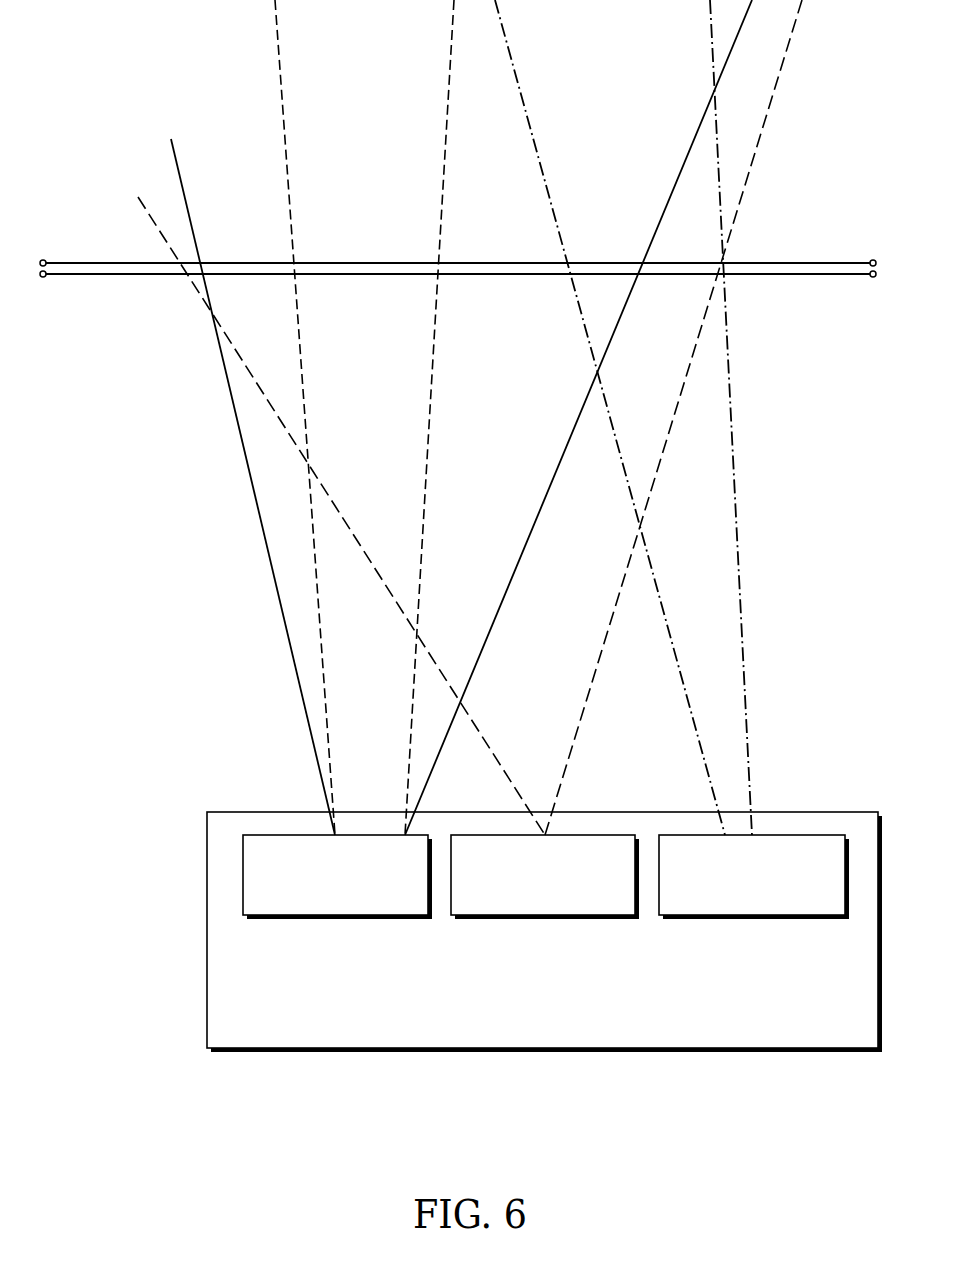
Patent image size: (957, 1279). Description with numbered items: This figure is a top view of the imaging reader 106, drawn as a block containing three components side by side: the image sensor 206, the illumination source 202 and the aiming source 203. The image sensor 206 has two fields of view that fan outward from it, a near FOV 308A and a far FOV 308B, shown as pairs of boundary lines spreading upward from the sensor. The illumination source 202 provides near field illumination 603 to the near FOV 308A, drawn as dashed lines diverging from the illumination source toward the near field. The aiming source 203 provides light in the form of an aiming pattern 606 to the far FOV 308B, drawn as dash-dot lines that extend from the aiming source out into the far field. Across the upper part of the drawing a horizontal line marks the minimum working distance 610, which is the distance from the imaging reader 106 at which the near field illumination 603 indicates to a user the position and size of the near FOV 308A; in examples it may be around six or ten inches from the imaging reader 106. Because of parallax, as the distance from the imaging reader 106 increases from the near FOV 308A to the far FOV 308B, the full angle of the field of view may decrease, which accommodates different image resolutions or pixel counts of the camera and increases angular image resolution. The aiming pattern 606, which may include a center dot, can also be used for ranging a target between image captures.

The imaging reader 106 is at (207, 930).
The image sensor 206 is at (338, 916).
The illumination source 202 is at (545, 916).
The aiming source 203 is at (755, 916).
The near FOV 308A is at (573, 428).
The far FOV 308B is at (437, 310).
The near field illumination 603 is at (588, 700).
The aiming pattern 606 is at (528, 113).
The minimum working distance 610 is at (831, 262).